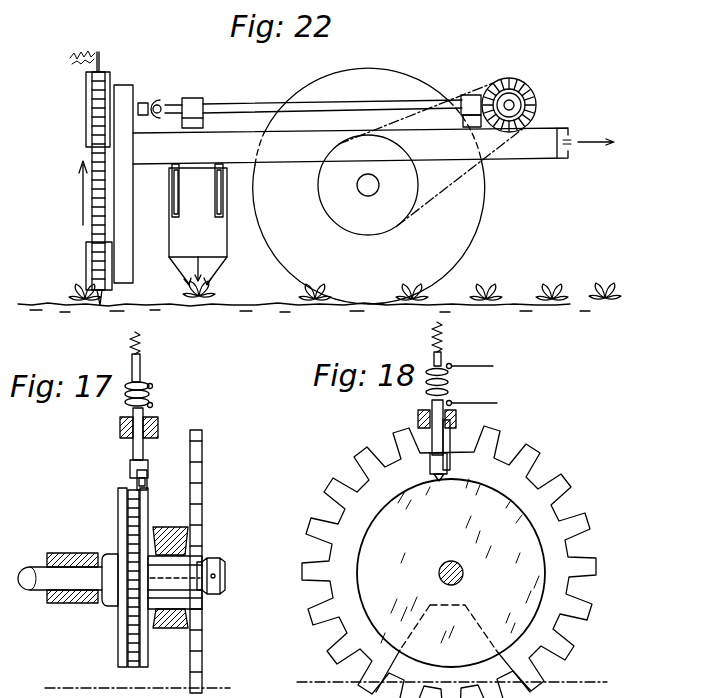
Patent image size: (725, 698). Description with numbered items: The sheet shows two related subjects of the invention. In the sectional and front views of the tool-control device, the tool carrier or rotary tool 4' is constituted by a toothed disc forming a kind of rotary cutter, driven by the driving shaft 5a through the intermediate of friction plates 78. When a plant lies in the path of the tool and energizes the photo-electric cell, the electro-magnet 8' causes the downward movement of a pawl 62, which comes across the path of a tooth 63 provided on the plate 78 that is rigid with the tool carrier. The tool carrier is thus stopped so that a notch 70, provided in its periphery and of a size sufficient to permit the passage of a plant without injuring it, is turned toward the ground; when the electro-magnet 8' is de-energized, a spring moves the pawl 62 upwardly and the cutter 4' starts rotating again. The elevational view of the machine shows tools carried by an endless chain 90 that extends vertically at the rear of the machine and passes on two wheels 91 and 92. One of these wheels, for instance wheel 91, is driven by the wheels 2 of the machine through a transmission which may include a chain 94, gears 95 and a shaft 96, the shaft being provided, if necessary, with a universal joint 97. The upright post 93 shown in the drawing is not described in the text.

In FIG. 22, the wheels 2 is at (474, 238).
In FIG. 22, the chain 90 is at (90, 230).
In FIG. 22, the wheel 91 is at (86, 128).
In FIG. 22, the wheel 92 is at (88, 273).
In FIG. 22, the upright post 93 is at (128, 231).
In FIG. 22, the chain 94 is at (445, 194).
In FIG. 22, the gears 95 is at (504, 83).
In FIG. 22, the shaft 96 is at (350, 106).
In FIG. 22, the universal joint 97 is at (162, 99).
In FIG. 17, the driving shaft 5a is at (33, 567).
In FIG. 18, the driving shaft 5a is at (441, 576).
In FIG. 17, the pawl 62 is at (131, 468).
In FIG. 18, the pawl 62 is at (430, 462).
In FIG. 17, the tooth 63 is at (146, 483).
In FIG. 18, the tooth 63 is at (457, 460).
In FIG. 17, the rotary tool 4' is at (214, 561).
In FIG. 18, the rotary tool 4' is at (438, 562).
In FIG. 17, the electro-magnet 8' is at (154, 370).
In FIG. 18, the electro-magnet 8' is at (461, 364).
In FIG. 17, the friction plates 78 is at (128, 649).
In FIG. 18, the notch 70 is at (512, 667).